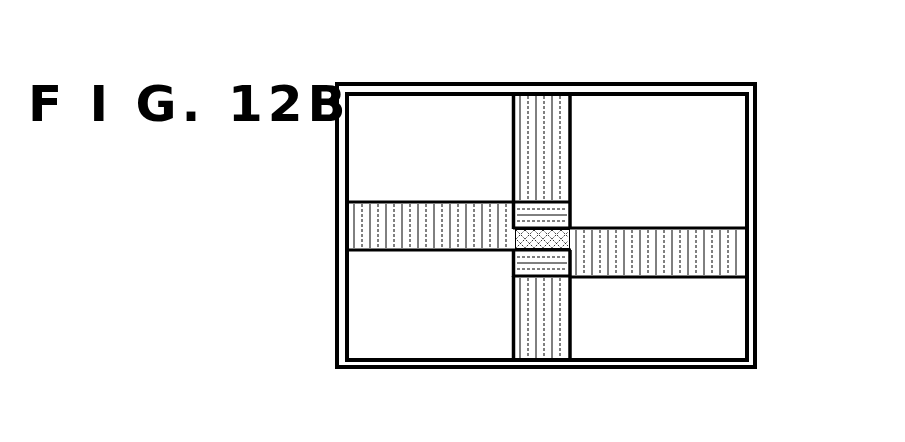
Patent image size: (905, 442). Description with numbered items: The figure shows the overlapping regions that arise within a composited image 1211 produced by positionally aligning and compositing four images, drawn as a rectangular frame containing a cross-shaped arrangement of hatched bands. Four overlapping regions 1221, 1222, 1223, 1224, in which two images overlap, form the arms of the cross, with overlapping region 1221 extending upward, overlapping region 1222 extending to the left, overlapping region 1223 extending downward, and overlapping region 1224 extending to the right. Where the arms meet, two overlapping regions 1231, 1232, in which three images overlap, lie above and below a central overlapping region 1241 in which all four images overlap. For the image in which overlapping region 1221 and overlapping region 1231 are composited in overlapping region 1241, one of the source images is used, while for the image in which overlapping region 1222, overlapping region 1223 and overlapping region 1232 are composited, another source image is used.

The composited image 1211 is at (389, 81).
The overlapping region 1221 is at (535, 114).
The overlapping region 1222 is at (371, 225).
The overlapping region 1223 is at (528, 337).
The overlapping region 1224 is at (727, 257).
The overlapping region 1231 is at (559, 212).
The overlapping region 1232 is at (547, 271).
The overlapping region 1241 is at (559, 240).